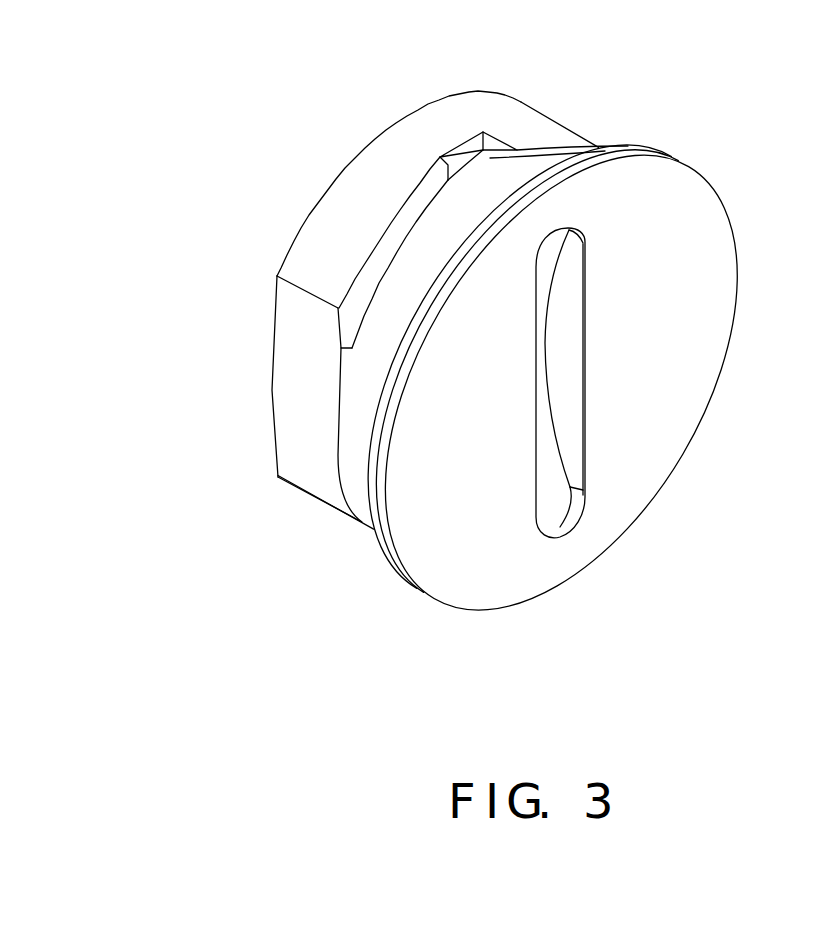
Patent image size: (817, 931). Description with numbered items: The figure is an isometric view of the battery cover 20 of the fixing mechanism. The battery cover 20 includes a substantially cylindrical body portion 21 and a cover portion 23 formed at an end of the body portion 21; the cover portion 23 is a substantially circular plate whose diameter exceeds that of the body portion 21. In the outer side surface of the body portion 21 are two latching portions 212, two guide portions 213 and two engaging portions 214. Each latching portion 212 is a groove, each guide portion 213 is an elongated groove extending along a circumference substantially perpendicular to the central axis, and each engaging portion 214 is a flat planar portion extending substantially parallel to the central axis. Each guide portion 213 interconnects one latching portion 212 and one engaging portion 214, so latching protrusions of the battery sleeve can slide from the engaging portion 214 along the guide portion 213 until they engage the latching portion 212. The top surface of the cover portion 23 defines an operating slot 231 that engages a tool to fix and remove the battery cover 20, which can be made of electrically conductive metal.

The battery cover 20 is at (467, 347).
The body portion 21 is at (557, 138).
The latching portion 212 is at (468, 162).
The guide portion 213 is at (390, 260).
The engaging portion 214 is at (298, 375).
The cover portion 23 is at (675, 243).
The operating slot 231 is at (563, 397).